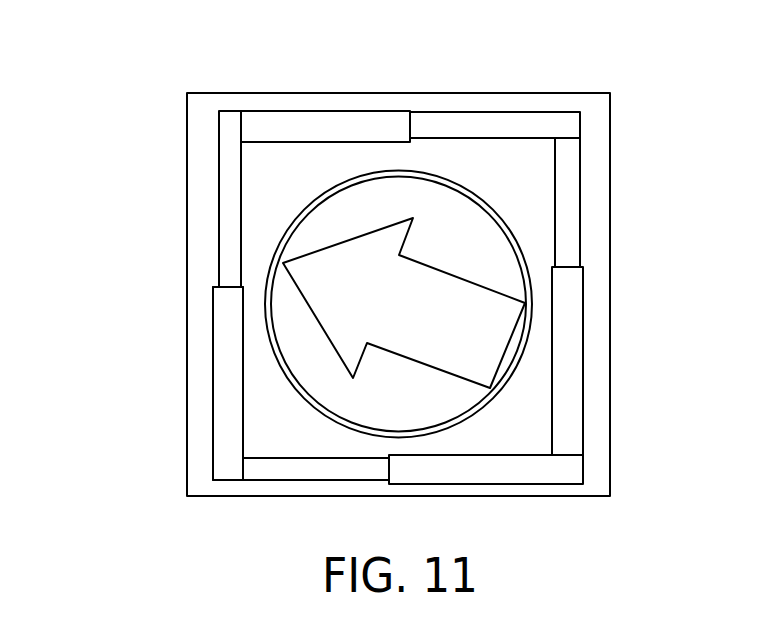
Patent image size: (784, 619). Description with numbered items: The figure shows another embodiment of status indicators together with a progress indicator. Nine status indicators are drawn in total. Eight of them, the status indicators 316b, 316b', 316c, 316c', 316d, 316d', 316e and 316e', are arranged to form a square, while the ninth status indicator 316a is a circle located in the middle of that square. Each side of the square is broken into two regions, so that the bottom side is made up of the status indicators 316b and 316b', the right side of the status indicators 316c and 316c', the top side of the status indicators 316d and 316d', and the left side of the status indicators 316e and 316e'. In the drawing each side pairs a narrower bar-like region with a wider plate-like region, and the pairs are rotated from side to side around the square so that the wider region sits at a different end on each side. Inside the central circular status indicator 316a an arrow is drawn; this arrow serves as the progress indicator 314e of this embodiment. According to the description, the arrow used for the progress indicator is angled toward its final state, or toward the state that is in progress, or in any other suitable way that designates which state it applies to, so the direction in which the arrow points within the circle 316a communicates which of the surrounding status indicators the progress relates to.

The status indicator 316a is at (513, 233).
The status indicator 316b is at (268, 525).
The status indicator 316b' is at (524, 523).
The status indicator 316c is at (635, 202).
The status indicator 316c' is at (649, 361).
The status indicator 316d is at (512, 86).
The status indicator 316d' is at (325, 79).
The status indicator 316e is at (145, 199).
The status indicator 316e' is at (133, 383).
The left tab plate 314e is at (348, 288).